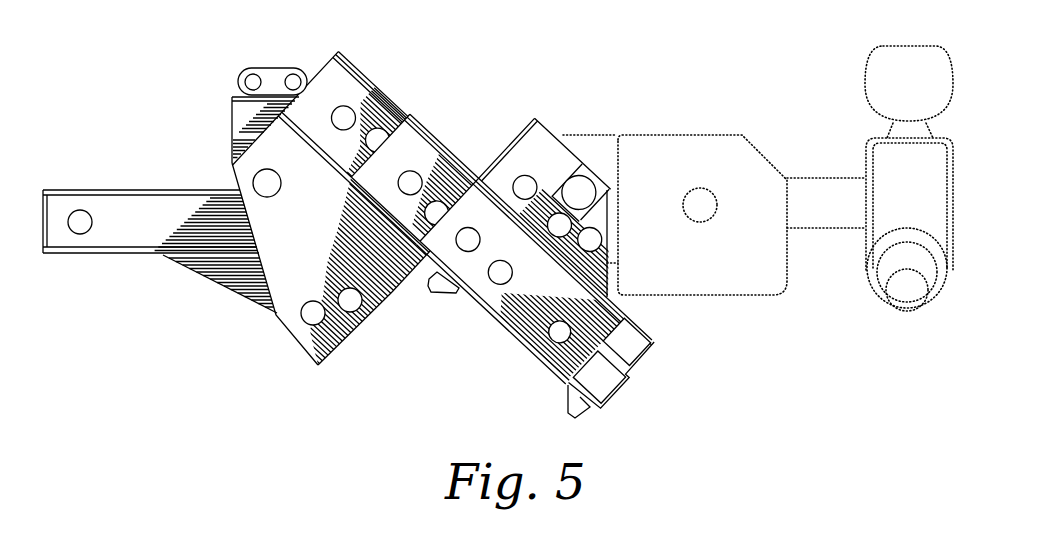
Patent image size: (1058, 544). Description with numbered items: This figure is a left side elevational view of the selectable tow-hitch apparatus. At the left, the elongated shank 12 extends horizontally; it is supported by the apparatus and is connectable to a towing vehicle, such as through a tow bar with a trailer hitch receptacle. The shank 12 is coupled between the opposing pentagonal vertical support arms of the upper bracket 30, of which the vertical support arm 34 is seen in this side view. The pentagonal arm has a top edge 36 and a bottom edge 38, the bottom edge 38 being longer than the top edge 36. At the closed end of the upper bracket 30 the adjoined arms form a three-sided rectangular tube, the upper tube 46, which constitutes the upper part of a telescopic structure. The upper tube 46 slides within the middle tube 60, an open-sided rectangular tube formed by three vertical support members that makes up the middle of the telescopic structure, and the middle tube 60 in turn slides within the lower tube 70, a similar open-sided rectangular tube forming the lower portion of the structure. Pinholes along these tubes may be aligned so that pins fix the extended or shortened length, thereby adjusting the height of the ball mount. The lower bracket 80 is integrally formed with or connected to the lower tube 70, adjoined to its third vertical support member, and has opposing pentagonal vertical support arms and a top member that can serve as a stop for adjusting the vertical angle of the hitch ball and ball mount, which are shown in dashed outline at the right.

The elongated shank 12 is at (112, 205).
The upper bracket 30 is at (287, 319).
The vertical support arm 34 is at (372, 260).
The top edge 36 is at (243, 137).
The bottom edge 38 is at (333, 362).
The upper tube 46 is at (337, 86).
The middle tube 60 is at (418, 145).
The lower tube 70 is at (550, 155).
The lower bracket 80 is at (585, 318).